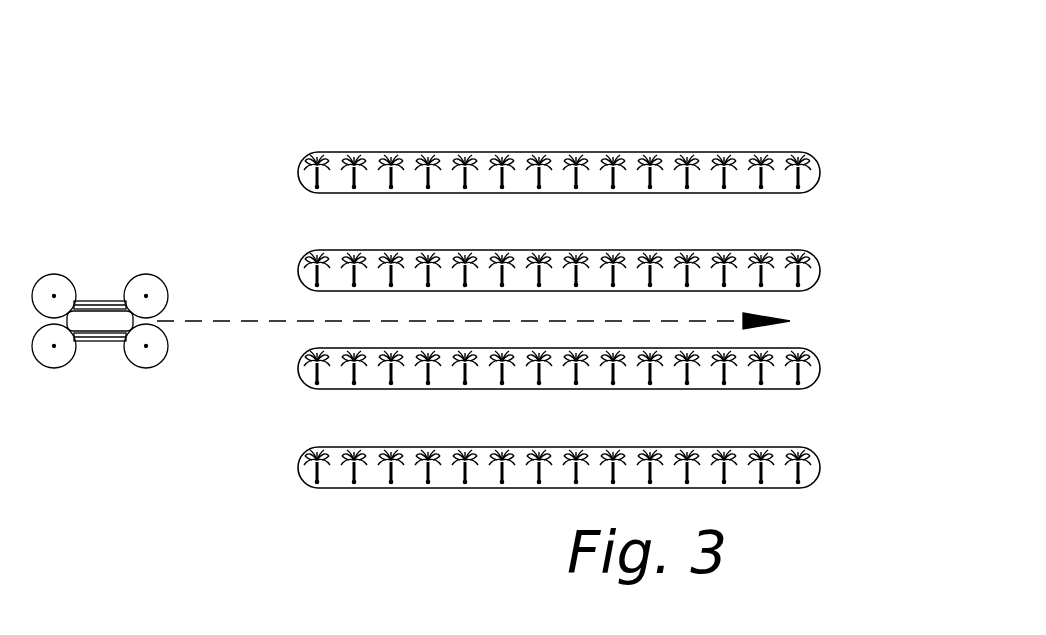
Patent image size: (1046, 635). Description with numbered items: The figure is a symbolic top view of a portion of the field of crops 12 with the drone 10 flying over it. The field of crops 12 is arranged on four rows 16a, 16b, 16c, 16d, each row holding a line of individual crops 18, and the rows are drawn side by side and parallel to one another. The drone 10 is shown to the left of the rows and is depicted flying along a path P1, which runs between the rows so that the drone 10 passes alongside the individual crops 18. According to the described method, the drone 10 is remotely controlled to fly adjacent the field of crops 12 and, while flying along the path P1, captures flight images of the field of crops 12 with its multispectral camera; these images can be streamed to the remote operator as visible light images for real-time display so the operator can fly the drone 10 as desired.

The drone 10 is at (106, 304).
The field of crops 12 is at (261, 85).
The row 16a is at (820, 170).
The row 16b is at (820, 269).
The row 16c is at (820, 368).
The row 16d is at (820, 467).
The individual crops 18 is at (323, 163).
The path P1 is at (618, 320).